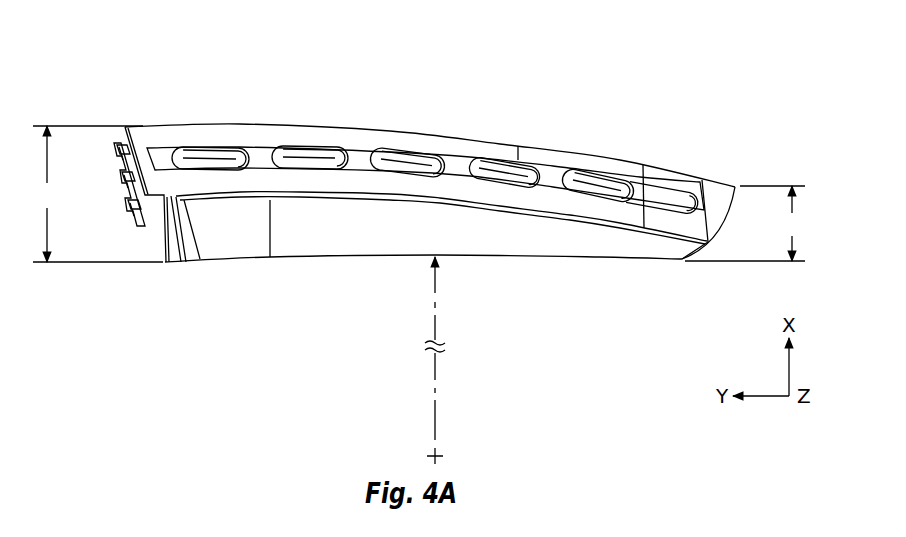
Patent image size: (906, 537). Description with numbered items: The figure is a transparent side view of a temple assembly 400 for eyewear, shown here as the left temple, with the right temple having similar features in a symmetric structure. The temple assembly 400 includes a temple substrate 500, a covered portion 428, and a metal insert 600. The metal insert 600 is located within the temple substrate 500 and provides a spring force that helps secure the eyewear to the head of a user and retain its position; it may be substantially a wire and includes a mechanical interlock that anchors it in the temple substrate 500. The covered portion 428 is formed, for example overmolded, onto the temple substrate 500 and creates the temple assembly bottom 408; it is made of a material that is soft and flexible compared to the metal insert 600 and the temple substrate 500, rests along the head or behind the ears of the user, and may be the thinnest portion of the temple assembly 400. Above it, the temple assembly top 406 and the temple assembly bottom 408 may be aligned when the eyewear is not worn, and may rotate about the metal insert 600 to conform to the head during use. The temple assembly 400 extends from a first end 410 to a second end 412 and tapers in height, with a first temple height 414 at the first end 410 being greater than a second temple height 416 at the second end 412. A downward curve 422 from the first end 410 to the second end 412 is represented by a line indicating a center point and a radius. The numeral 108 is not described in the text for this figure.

The temple assembly 400 is at (108, 50).
The temple assembly top 406 is at (247, 126).
The temple assembly bottom 408 is at (248, 237).
The first end 410 is at (133, 128).
The second end 412 is at (736, 186).
The first temple height 414 is at (98, 194).
The second temple height 416 is at (745, 223).
The downward curve 422 is at (436, 370).
The covered portion 428 is at (452, 243).
The temple substrate 500 is at (390, 135).
The metal insert 600 is at (507, 172).
The connector 108 is at (128, 216).